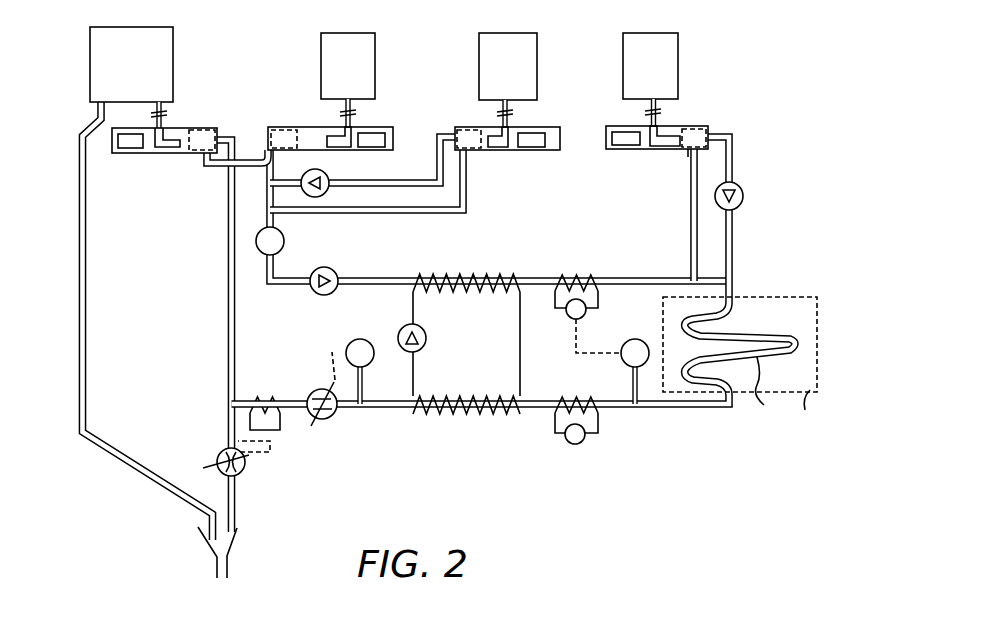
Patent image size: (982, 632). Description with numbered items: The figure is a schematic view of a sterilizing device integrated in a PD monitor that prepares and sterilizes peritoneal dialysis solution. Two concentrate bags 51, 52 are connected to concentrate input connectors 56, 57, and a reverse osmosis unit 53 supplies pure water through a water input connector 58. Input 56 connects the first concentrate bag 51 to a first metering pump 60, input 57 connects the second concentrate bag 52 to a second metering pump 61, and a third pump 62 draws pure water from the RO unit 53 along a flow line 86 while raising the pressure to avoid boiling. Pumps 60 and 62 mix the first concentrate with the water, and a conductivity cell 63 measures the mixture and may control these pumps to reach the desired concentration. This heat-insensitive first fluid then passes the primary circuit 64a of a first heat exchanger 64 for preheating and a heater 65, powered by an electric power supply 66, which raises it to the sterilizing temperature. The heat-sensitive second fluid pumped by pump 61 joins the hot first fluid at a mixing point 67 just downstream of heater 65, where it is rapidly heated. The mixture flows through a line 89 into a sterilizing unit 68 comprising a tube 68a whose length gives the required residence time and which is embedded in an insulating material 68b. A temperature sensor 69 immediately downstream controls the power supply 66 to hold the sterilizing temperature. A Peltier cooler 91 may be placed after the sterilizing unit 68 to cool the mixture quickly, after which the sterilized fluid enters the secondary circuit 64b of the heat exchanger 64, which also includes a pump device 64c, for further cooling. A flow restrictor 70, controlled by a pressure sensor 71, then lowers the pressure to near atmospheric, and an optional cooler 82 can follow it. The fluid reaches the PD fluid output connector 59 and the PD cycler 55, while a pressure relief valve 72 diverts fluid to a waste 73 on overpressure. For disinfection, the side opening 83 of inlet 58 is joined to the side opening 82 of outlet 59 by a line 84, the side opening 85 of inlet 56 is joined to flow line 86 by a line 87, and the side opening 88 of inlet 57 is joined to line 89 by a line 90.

The first concentrate bag 51 is at (538, 42).
The second concentrate bag 52 is at (679, 43).
The reverse osmosis unit 53 is at (375, 42).
The PD cycler 55 is at (174, 40).
The concentrate input connector 56 is at (545, 127).
The concentrate input connector 57 is at (693, 126).
The water input connector 58 is at (385, 127).
The PD fluid output connector 59 is at (205, 128).
The first metering pump 60 is at (329, 181).
The second metering pump 61 is at (742, 200).
The third pump 62 is at (334, 272).
The conductivity cell 63 is at (284, 243).
The first heat exchanger 64 is at (477, 372).
The primary circuit 64a is at (500, 275).
The secondary circuit 64b is at (490, 397).
The pump device 64c is at (426, 335).
The heater 65 is at (590, 275).
The electric power supply 66 is at (572, 320).
The mixing point 67 is at (735, 282).
The sterilizing unit 68 is at (800, 297).
The tube 68a is at (765, 393).
The insulating material 68b is at (818, 410).
The temperature sensor 69 is at (628, 362).
The flow restrictor 70 is at (333, 420).
The pressure sensor 71 is at (348, 345).
The pressure relief valve 72 is at (246, 470).
The waste 73 is at (237, 557).
The cooler 82 is at (206, 166).
The side opening 83 is at (272, 140).
The line 84 is at (255, 168).
The side opening 85 is at (470, 152).
The flow line 86 is at (262, 200).
The line 87 is at (426, 214).
The side opening 88 is at (690, 158).
The line 89 is at (722, 270).
The line 90 is at (690, 213).
The cooler 91 is at (602, 428).